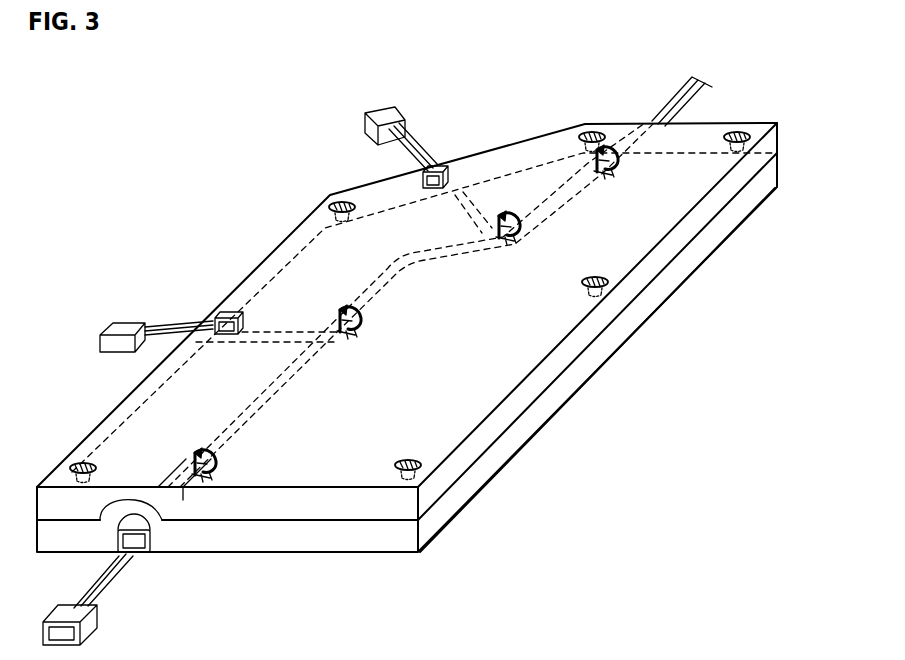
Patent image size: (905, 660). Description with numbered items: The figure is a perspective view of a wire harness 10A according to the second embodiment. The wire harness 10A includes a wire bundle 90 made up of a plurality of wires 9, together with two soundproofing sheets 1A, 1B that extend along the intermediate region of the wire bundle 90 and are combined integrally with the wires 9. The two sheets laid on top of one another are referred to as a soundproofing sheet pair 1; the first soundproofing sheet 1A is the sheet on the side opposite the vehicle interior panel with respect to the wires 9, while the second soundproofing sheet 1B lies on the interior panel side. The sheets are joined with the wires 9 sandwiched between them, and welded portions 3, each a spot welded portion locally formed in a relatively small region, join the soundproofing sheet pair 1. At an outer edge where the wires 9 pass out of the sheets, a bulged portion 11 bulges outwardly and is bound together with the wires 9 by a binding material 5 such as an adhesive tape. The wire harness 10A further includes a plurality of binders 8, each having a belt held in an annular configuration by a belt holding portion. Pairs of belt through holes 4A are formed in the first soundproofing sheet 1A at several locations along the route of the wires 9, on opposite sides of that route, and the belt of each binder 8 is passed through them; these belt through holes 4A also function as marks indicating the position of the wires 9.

The soundproofing sheet pair 1 is at (573, 448).
The first soundproofing sheet 1A is at (478, 438).
The second soundproofing sheet 1B is at (477, 473).
The welded portion 3 is at (330, 196).
The belt through hole 4A is at (357, 332).
The binding material 5 is at (165, 552).
The binder 8 is at (212, 320).
The wire 9 is at (108, 587).
The wire harness 10A is at (258, 182).
The bulged portion 11 is at (152, 498).
The wire bundle 90 is at (278, 390).